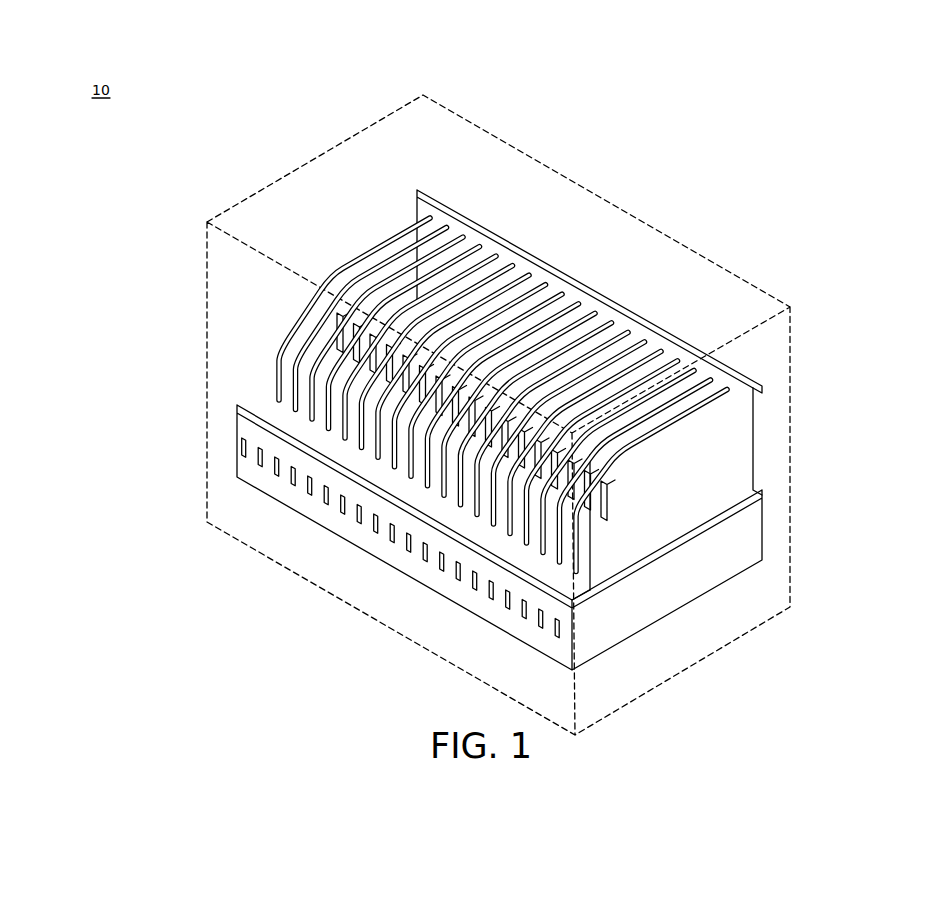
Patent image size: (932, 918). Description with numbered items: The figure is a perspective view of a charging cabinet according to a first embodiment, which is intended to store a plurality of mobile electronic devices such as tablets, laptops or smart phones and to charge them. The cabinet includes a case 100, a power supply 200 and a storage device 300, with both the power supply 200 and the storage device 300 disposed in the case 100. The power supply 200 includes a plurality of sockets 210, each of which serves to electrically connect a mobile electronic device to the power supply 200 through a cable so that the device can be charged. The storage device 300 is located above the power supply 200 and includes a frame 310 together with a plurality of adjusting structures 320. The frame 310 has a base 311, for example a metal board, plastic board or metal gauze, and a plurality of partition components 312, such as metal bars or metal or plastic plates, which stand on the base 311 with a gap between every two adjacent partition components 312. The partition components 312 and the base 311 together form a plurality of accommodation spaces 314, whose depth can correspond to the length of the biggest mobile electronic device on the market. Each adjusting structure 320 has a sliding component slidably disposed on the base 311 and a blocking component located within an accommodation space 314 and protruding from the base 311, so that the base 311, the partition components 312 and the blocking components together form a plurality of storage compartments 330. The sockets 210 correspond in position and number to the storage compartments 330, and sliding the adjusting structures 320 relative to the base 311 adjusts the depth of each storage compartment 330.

The case 100 is at (519, 150).
The power supply 200 is at (697, 573).
The sockets 210 is at (553, 632).
The storage device 300 is at (536, 377).
The frame 310 is at (653, 377).
The base 311 is at (557, 580).
The partition components 312 is at (672, 431).
The accommodation spaces 314 is at (391, 233).
The adjusting structures 320 is at (323, 323).
The storage compartments 330 is at (265, 381).